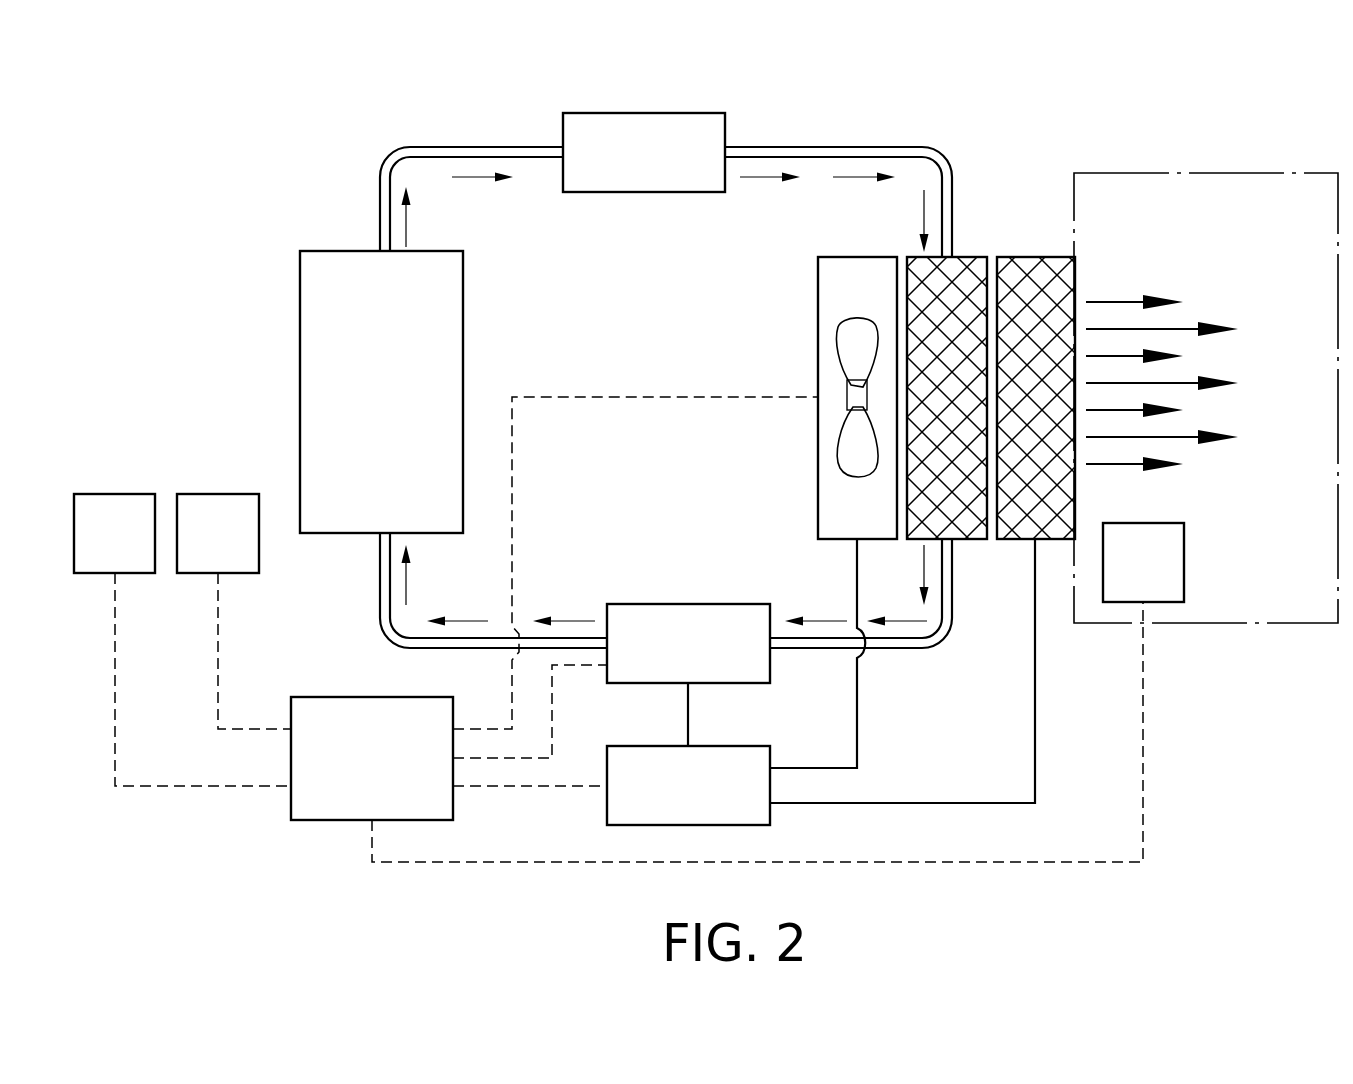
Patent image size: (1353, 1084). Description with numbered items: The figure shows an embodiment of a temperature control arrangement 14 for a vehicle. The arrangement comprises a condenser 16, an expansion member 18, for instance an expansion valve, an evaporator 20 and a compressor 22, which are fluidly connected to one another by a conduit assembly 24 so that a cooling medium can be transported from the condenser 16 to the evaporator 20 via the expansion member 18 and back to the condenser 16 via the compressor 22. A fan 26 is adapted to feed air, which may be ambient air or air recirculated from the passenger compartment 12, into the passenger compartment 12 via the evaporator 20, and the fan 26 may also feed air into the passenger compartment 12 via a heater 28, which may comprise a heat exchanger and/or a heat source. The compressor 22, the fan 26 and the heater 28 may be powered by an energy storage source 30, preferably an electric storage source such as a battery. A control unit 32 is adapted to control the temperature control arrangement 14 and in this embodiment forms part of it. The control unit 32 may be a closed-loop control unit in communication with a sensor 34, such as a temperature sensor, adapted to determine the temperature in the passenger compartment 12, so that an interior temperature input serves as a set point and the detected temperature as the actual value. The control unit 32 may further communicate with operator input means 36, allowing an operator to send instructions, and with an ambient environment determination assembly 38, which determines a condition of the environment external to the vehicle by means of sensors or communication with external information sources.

The passenger compartment 12 is at (1277, 214).
The temperature control arrangement 14 is at (200, 118).
The condenser 16 is at (300, 348).
The expansion member 18 is at (641, 113).
The evaporator 20 is at (978, 257).
The compressor 22 is at (607, 674).
The conduit assembly 24 is at (781, 147).
The fan 26 is at (857, 257).
The heater 28 is at (1045, 257).
The energy storage source 30 is at (687, 825).
The control unit 32 is at (321, 820).
The sensor 34 is at (1184, 562).
The operator input means 36 is at (214, 494).
The ambient environment determination assembly 38 is at (110, 494).